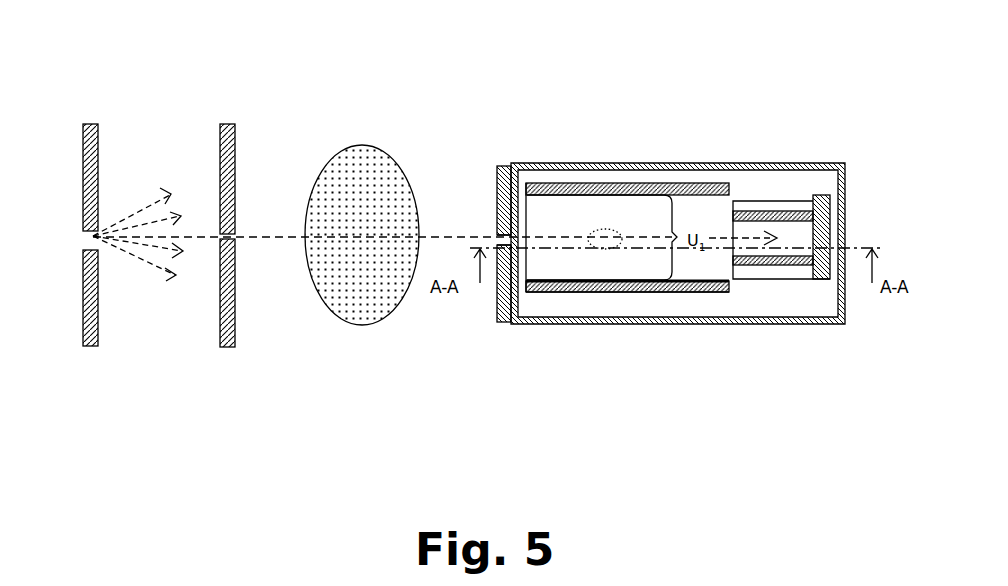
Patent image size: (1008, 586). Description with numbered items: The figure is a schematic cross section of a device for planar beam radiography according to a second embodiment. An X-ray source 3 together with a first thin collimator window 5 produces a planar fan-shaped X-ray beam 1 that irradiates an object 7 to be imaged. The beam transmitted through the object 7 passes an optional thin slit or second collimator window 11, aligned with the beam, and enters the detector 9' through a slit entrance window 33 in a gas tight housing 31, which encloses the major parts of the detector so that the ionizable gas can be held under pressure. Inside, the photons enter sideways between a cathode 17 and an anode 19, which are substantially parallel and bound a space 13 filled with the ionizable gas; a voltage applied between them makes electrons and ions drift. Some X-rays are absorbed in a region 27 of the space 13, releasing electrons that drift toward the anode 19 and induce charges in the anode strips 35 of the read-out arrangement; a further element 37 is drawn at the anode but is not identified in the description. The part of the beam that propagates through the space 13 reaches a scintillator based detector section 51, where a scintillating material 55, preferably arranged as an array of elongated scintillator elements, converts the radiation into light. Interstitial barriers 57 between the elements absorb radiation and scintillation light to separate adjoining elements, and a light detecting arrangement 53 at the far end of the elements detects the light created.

The planar X-ray beam 1 is at (283, 233).
The X-ray source 3 is at (93, 234).
The first thin collimator window 5 is at (235, 330).
The object to be imaged 7 is at (375, 325).
The detector 9' is at (444, 59).
The second collimator window 11 is at (499, 308).
The space 13 is at (700, 262).
The cathode 17 is at (628, 183).
The anode 19 is at (540, 292).
The region 27 is at (600, 229).
The gas tight housing 31 is at (689, 165).
The slit entrance window 33 is at (497, 238).
The anode strips 35 is at (647, 292).
The electrode base 37 is at (610, 292).
The scintillator based detector section 51 is at (745, 280).
The light detecting arrangement 53 is at (823, 280).
The scintillating material 55 is at (758, 228).
The interstitial barriers 57 is at (797, 212).